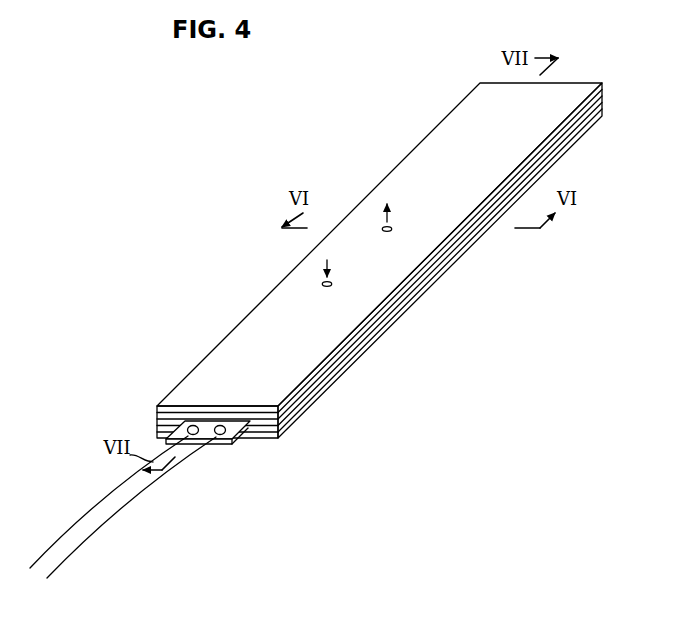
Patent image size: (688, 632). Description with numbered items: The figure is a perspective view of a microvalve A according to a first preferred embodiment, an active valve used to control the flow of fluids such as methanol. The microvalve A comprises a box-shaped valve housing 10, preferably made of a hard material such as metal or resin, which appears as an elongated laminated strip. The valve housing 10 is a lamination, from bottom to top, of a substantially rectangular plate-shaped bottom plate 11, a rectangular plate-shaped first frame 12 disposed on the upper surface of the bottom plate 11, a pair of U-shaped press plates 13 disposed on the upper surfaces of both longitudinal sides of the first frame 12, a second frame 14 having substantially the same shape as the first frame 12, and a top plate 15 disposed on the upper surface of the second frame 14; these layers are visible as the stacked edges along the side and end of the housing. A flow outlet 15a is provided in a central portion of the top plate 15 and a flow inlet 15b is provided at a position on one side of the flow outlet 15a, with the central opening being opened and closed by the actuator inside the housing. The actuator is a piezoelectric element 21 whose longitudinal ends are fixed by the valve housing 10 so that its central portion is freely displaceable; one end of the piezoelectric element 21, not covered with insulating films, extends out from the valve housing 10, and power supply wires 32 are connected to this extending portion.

The valve housing 10 is at (402, 260).
The bottom plate 11 is at (328, 388).
The first frame 12 is at (362, 355).
The press plates 13 is at (388, 322).
The second frame 14 is at (417, 290).
The top plate 15 is at (252, 322).
The flow outlet 15a is at (380, 227).
The flow inlet 15b is at (320, 283).
The piezoelectric element 21 is at (222, 442).
The power supply wires 32 is at (85, 518).
The microvalve A is at (408, 118).